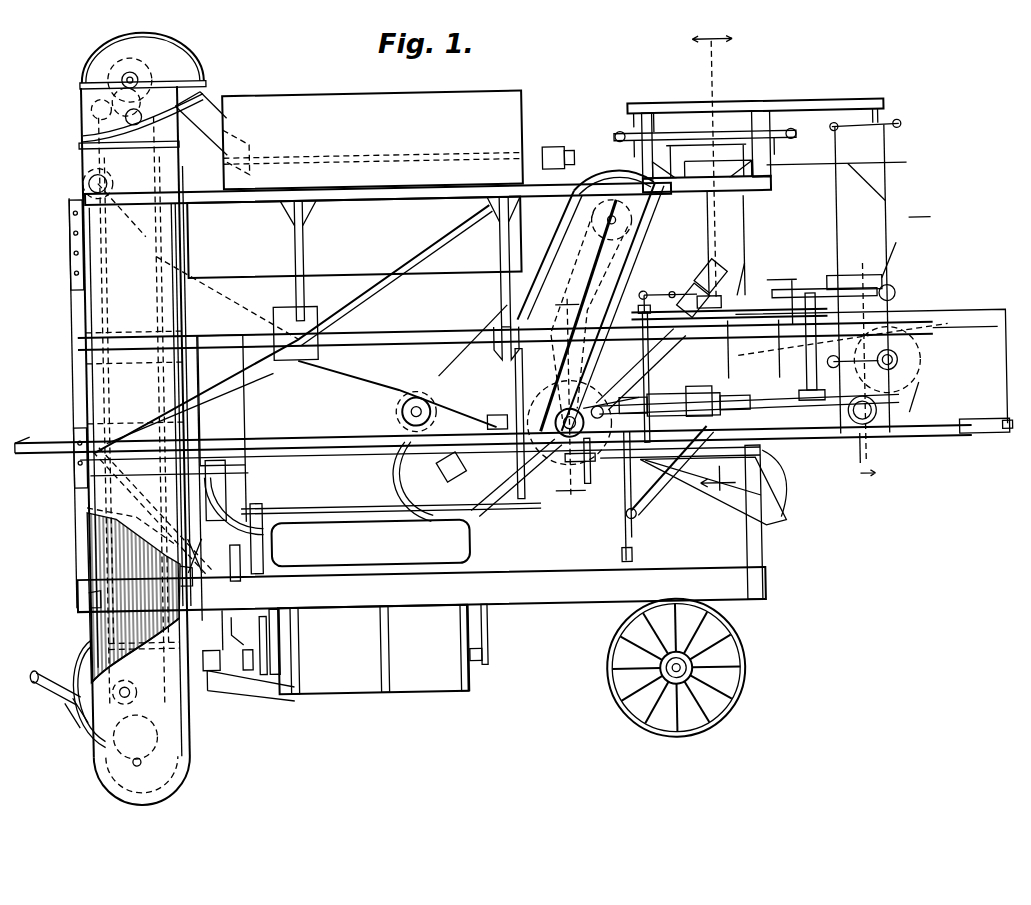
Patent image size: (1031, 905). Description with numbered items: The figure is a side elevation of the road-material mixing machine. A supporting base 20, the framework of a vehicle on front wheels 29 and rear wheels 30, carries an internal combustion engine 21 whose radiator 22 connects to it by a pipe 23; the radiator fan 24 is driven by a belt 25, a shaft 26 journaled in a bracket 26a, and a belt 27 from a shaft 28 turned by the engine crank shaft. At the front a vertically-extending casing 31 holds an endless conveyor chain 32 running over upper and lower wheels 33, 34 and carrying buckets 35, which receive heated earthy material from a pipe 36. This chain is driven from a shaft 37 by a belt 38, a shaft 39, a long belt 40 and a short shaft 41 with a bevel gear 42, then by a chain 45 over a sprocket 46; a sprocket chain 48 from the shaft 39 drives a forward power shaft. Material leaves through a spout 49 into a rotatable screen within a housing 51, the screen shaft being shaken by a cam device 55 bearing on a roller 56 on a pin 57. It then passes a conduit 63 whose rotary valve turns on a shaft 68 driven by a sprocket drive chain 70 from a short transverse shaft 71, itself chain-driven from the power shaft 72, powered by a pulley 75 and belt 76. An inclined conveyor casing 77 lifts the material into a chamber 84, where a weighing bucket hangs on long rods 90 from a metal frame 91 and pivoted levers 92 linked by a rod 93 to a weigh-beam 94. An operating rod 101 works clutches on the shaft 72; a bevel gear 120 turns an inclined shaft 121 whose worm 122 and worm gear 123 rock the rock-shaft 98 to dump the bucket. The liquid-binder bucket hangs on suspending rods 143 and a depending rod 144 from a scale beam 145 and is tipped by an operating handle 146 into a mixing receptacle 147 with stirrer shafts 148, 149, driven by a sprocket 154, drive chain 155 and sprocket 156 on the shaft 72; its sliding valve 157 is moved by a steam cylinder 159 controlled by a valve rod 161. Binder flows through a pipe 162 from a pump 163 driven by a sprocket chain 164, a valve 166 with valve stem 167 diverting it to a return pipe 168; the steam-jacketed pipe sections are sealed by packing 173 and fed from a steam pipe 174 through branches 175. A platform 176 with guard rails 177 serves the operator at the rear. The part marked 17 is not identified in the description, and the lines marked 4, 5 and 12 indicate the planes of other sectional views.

The section line 4 is at (716, 259).
The section line / pulley 5 is at (569, 395).
The section line 12 is at (896, 344).
The frame beam 17 is at (20, 452).
The supporting base 20 is at (598, 606).
The internal combustion engine 21 is at (345, 640).
The radiator 22 is at (225, 327).
The pipe 23 is at (206, 516).
The radiator fan 24 is at (240, 385).
The belt 25 is at (250, 476).
The shaft 26 is at (350, 520).
The bracket 26a is at (258, 505).
The belt 27 is at (486, 640).
The shaft 28 is at (478, 660).
The front wheels 29 is at (70, 656).
The rear wheels 30 is at (742, 660).
The vertically-extending casing 31 is at (186, 748).
The endless conveyor chain 32 is at (100, 555).
The upper wheel 33 is at (190, 50).
The lower wheel 34 is at (130, 702).
The buckets 35 is at (86, 592).
The pipe 36 is at (30, 690).
The shaft 37 is at (215, 685).
The belt 38 is at (220, 628).
The shaft 39 is at (220, 556).
The long belt 40 is at (355, 281).
The short shaft 41 is at (114, 203).
The bevel gear 42 is at (74, 235).
The chain 45 is at (130, 115).
The sprocket 46 is at (89, 120).
The sprocket chain 48 is at (80, 502).
The spout 49 is at (205, 100).
The housing 51 is at (290, 92).
The cam device 55 is at (560, 148).
The roller 56 is at (582, 152).
The pin 57 is at (85, 140).
The conduit 63 is at (394, 412).
The shaft 68 is at (403, 415).
The sprocket drive chain 70 is at (403, 369).
The short transverse shaft 71 is at (592, 301).
The power shaft 72 is at (524, 470).
The pulley 75 is at (513, 480).
The belt 76 is at (520, 481).
The inclined conveyor casing 77 is at (418, 470).
The chamber 84 is at (846, 161).
The long rods 90 is at (776, 188).
The metal frame 91 is at (760, 118).
The pivoted levers 92 is at (704, 131).
The rod 93 is at (701, 250).
The weigh-beam 94 is at (729, 294).
The rock-shaft 98 is at (776, 336).
The operating rod 101 is at (639, 304).
The bevel gear 120 is at (611, 396).
The inclined shaft 121 is at (748, 377).
The worm 122 is at (664, 347).
The worm gear 123 is at (786, 288).
The suspending rods 143 is at (890, 190).
The depending rod 144 is at (842, 225).
The scale beam 145 is at (900, 300).
The operating handle 146 is at (905, 270).
The receptacle 147 is at (923, 359).
The shaft 148 is at (895, 365).
The shaft 149 is at (938, 388).
The sprocket 154 is at (854, 337).
The drive chain 155 is at (760, 230).
The sprocket 156 is at (741, 257).
The sliding valve 157 is at (733, 278).
The steam cylinder 159 is at (870, 455).
The valve rod 161 is at (877, 417).
The pipe 162 is at (630, 557).
The pump 163 is at (670, 473).
The sprocket chain 164 is at (648, 388).
The valve 166 is at (720, 386).
The valve stem 167 is at (683, 380).
The pipe 168 is at (622, 545).
The packing 173 is at (599, 461).
The steam pipe 174 is at (808, 490).
The branch 175 is at (770, 500).
The platform 176 is at (978, 417).
The guard rails 177 is at (874, 360).